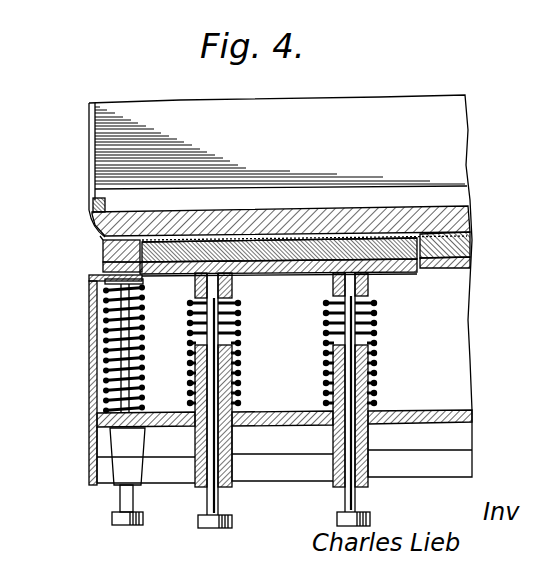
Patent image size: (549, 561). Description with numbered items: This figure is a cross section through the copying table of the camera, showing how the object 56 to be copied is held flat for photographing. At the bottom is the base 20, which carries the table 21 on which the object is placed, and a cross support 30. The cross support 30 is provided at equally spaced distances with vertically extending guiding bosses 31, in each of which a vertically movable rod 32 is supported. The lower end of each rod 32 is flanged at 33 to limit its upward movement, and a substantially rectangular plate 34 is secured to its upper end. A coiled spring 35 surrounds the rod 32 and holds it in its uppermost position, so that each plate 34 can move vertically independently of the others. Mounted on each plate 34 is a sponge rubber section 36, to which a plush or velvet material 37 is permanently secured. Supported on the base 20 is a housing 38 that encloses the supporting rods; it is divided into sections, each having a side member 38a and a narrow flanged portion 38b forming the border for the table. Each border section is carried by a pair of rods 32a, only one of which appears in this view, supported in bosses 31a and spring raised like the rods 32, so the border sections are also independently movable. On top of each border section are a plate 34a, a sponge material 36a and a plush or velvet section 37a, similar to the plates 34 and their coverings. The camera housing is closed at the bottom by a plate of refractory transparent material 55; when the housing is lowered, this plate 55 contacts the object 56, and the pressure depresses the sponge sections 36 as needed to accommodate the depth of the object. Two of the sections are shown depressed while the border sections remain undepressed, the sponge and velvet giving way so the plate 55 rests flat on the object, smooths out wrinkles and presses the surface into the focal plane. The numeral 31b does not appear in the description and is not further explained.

The base 20 is at (482, 439).
The table 21 is at (480, 264).
The cross support 30 is at (473, 407).
The guiding boss 31 is at (332, 375).
The boss 31a is at (194, 353).
The second guide cylinder 31b is at (350, 380).
The vertically movable rod 32 is at (352, 350).
The rod 32a is at (110, 333).
The flange 33 is at (233, 522).
The rectangular plate 34 is at (420, 266).
The plate 34a is at (103, 252).
The coiled spring 35 is at (323, 307).
The sponge rubber section 36 is at (262, 274).
The sponge material 36a is at (100, 235).
The plush or velvet material 37 is at (313, 237).
The plush or velvet section 37a is at (100, 213).
The housing 38 is at (81, 419).
The side member 38a is at (90, 366).
The narrow flanged portion 38b is at (103, 271).
The plate of refractory transparent material 55 is at (473, 208).
The object 56 is at (360, 233).